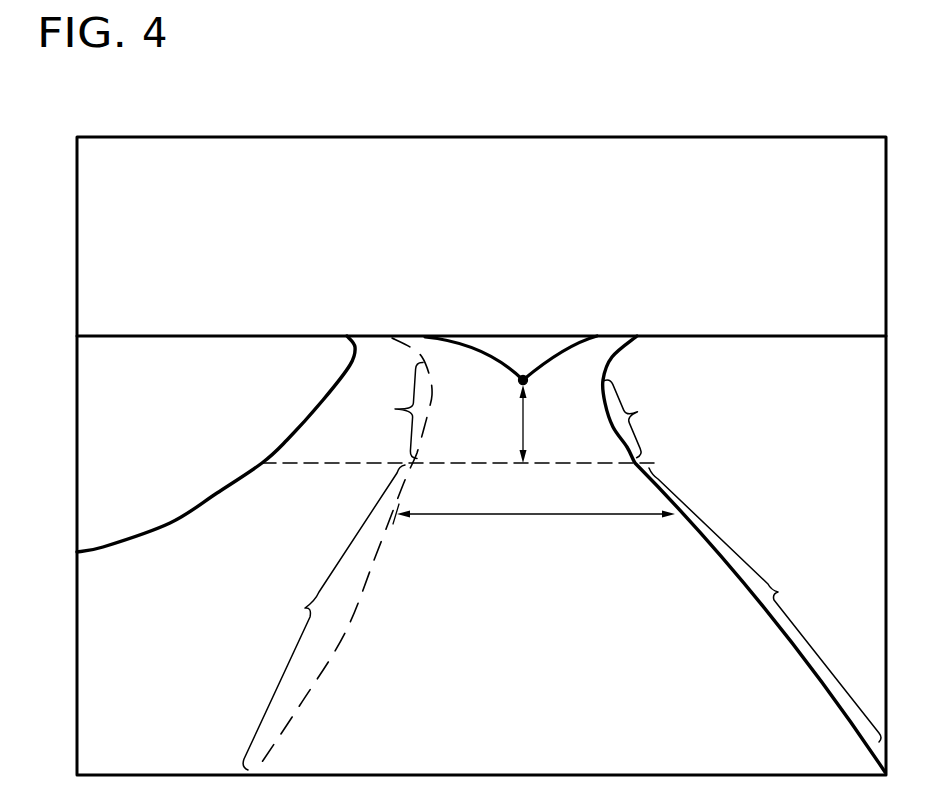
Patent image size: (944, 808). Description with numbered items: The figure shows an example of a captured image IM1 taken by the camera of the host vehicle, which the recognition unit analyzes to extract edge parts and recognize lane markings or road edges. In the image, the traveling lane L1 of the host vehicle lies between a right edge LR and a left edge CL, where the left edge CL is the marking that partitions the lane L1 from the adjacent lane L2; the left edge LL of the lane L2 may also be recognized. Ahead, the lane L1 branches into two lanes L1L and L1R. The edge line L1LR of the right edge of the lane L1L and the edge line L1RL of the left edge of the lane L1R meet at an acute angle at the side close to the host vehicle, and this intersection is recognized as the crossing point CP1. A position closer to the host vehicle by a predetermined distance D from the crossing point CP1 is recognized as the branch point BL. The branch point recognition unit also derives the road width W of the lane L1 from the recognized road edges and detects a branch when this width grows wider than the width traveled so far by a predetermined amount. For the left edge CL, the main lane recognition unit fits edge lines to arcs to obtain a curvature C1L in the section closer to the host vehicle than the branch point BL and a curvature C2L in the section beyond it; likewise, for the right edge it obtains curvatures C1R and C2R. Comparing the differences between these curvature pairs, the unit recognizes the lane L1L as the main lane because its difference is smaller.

The captured image IM1 is at (628, 137).
The left edge LL is at (170, 522).
The right edge LR is at (765, 615).
The edge line L1LR is at (487, 347).
The edge line L1RL is at (560, 347).
The crossing point CP1 is at (525, 372).
The lane L1L is at (493, 390).
The lane L1R is at (593, 390).
The lane L1 is at (547, 728).
The lane L2 is at (178, 726).
The left edge CL is at (332, 657).
The branch point BL is at (652, 464).
The predetermined distance D is at (525, 425).
The road width W is at (540, 516).
The curvature C2L is at (386, 410).
The curvature C2R is at (646, 419).
The curvature C1L is at (324, 617).
The curvature C1R is at (765, 605).